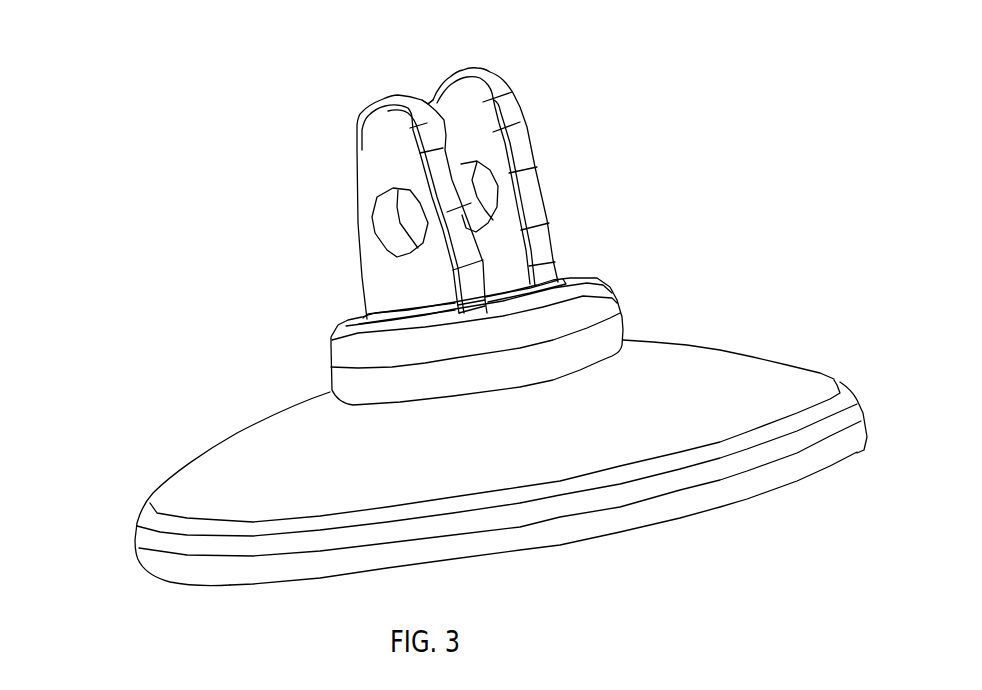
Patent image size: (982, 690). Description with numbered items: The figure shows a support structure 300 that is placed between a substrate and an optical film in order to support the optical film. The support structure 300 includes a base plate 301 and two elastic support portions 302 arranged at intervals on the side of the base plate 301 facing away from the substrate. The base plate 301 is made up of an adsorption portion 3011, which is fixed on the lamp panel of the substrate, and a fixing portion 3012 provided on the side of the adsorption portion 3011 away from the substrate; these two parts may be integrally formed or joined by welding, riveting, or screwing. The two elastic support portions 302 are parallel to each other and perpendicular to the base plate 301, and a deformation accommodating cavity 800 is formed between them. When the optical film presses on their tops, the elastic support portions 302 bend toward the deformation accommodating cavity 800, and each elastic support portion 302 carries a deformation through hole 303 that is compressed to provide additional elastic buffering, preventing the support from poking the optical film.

The support structure 300 is at (461, 293).
The base plate 301 is at (512, 405).
The adsorption portion 3011 is at (763, 380).
The fixing portion 3012 is at (537, 333).
The elastic support portion 302 is at (372, 145).
The deformation through hole 303 is at (381, 214).
The deformation accommodating cavity 800 is at (424, 86).